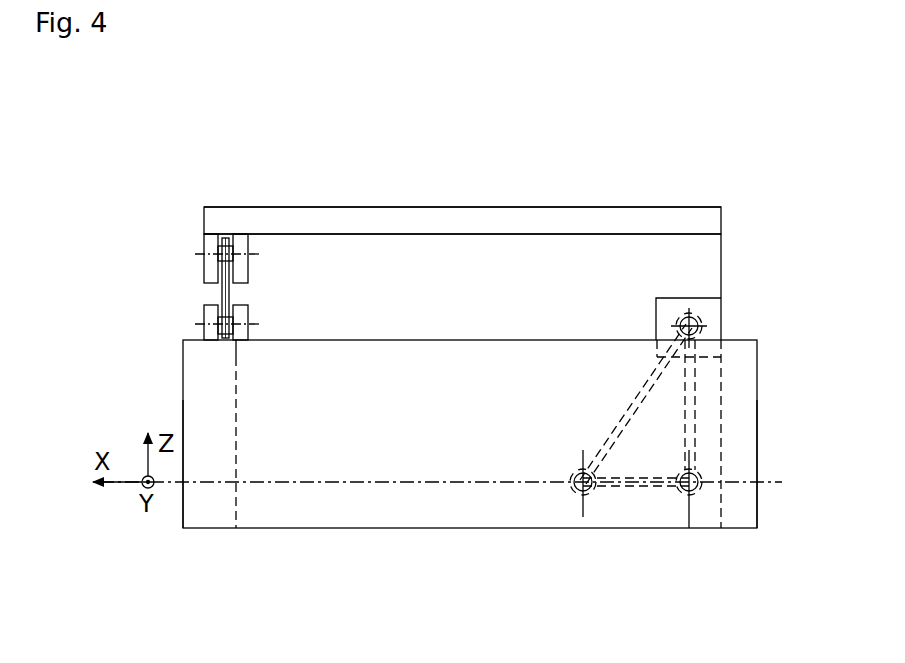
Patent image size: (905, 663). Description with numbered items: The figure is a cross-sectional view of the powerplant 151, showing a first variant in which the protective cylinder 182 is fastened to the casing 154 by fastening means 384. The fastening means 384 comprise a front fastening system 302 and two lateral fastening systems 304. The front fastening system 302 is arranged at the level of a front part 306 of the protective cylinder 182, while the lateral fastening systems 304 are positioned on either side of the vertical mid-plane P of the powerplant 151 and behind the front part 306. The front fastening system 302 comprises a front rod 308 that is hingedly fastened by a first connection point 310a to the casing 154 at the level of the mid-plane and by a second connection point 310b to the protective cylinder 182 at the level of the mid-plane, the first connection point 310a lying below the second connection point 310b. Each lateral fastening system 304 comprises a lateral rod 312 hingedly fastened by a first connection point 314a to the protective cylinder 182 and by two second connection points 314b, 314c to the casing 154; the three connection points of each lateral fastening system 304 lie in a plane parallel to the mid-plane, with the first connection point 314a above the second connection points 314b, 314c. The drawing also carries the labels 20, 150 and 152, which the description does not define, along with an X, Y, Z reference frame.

The powerplant 151 is at (325, 180).
The protective cylinder 182 is at (632, 217).
The display module 20 is at (418, 298).
The front fastening system 302 is at (152, 250).
The front part 306 is at (213, 215).
The front rod 308 is at (227, 295).
The first connection point 310a is at (222, 325).
The second connection point 310b is at (220, 257).
The fastening means 384 is at (755, 265).
The lateral fastening system 304 is at (738, 315).
The lateral rod 312 is at (632, 405).
The first connection point 314a is at (677, 325).
The second connection point 314b is at (590, 491).
The second connection point 314c is at (692, 472).
The base 150 is at (726, 536).
The base right side 152 is at (766, 499).
The casing 154 is at (208, 518).